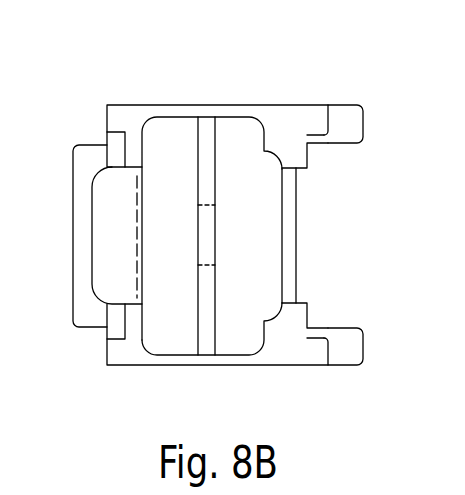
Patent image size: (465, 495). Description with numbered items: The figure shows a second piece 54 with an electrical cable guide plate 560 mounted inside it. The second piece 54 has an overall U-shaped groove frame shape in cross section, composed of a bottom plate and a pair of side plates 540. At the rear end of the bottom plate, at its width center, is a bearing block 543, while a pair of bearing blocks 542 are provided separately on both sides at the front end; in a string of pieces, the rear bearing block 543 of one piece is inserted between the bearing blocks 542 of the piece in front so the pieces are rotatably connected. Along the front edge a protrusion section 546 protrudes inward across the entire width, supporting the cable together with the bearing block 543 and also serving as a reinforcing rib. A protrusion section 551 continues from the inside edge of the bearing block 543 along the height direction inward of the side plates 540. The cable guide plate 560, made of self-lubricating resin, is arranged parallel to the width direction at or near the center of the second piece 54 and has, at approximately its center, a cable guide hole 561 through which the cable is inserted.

The second piece 54 is at (290, 96).
The side plate 540 is at (150, 105).
The bearing block 542 is at (363, 127).
The bearing block 543 is at (86, 328).
The protrusion section 546 is at (297, 195).
The protrusion section 551 is at (143, 257).
The cable guide plate 560 is at (215, 165).
The cable guide hole 561 is at (215, 222).